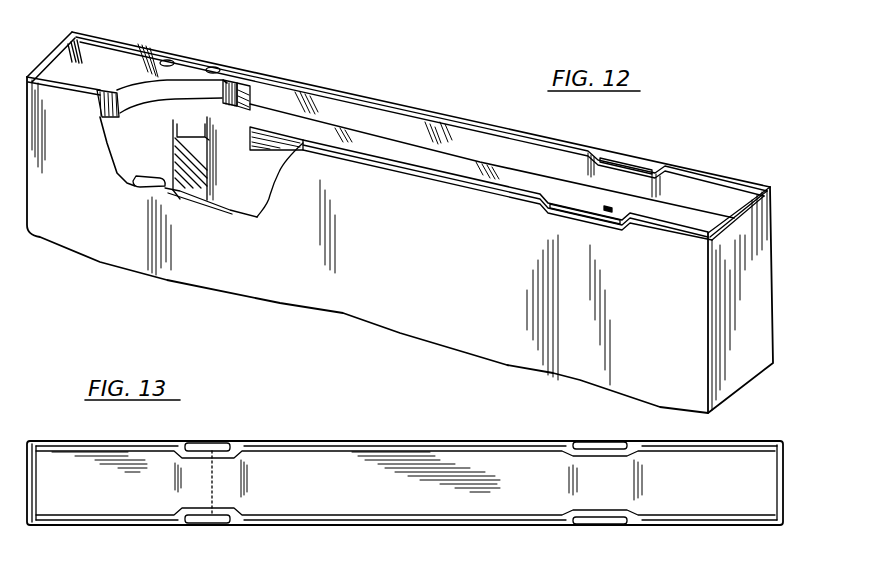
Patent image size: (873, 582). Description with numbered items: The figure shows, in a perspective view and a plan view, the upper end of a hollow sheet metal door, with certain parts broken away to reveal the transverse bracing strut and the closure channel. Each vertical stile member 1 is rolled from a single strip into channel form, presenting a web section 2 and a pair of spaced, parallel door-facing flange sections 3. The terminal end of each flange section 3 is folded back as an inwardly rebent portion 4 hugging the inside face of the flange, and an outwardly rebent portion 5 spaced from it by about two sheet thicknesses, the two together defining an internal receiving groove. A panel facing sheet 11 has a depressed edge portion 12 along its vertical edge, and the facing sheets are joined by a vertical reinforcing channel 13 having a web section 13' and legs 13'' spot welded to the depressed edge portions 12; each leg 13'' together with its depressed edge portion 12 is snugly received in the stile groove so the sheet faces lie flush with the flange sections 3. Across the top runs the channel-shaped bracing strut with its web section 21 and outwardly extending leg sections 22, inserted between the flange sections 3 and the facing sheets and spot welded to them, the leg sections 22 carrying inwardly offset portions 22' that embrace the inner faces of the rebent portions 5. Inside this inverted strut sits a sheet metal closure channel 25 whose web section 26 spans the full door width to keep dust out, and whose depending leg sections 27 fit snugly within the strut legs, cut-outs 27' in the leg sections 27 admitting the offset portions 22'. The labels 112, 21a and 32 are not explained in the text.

In FIG. 12, the stile member 1 is at (44, 251).
In FIG. 13, the stile member 1 is at (111, 536).
In FIG. 12, the web section 2 is at (57, 50).
In FIG. 13, the web section 2 is at (27, 512).
In FIG. 12, the flange section 3 is at (147, 50).
In FIG. 13, the flange section 3 is at (100, 441).
In FIG. 12, the inwardly rebent portion 4 is at (147, 190).
In FIG. 13, the inwardly rebent portion 4 is at (207, 441).
In FIG. 12, the outwardly rebent portion 5 is at (210, 127).
In FIG. 12, the panel facing sheet 11 is at (505, 128).
In FIG. 13, the panel facing sheet 11 is at (405, 441).
In FIG. 12, the panel portion 112 is at (298, 202).
In FIG. 12, the depressed edge portion 12 is at (608, 212).
In FIG. 13, the depressed edge portion 12 is at (221, 513).
In FIG. 12, the reinforcing channel 13 is at (199, 188).
In FIG. 12, the web section of reinforcing channel 13' is at (186, 209).
In FIG. 12, the leg of reinforcing channel 13'' is at (179, 126).
In FIG. 12, the web section of bracing strut 21 is at (343, 130).
In FIG. 12, the channel floor 21a is at (413, 124).
In FIG. 12, the leg section of bracing strut 22 is at (298, 110).
In FIG. 13, the leg section of bracing strut 22 is at (405, 487).
In FIG. 12, the inwardly offset portion 22' is at (242, 74).
In FIG. 13, the inwardly offset portion 22' is at (396, 479).
In FIG. 12, the closure channel 25 is at (97, 51).
In FIG. 13, the closure channel 25 is at (343, 459).
In FIG. 12, the web section of closure channel 26 is at (122, 62).
In FIG. 13, the web section of closure channel 26 is at (295, 447).
In FIG. 12, the leg section of closure channel 27 is at (217, 90).
In FIG. 12, the cut-out 27' is at (267, 80).
In FIG. 12, the cut-out 32 is at (117, 151).